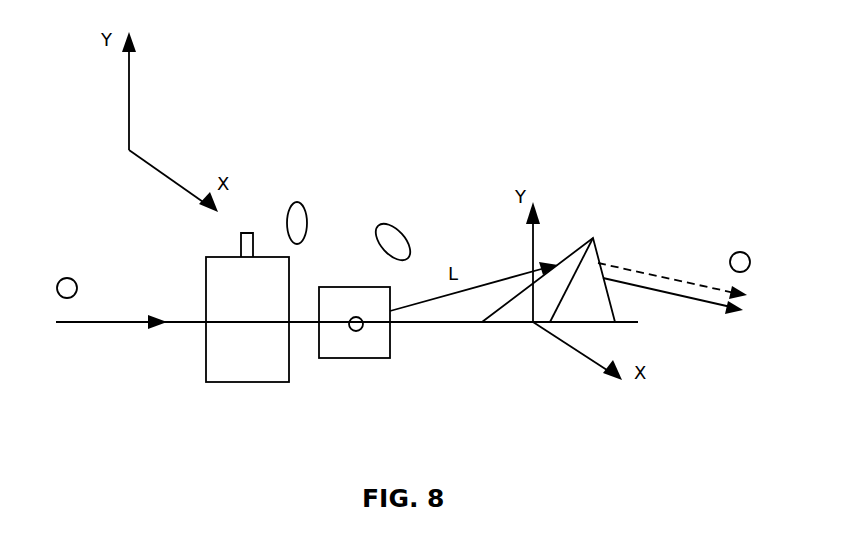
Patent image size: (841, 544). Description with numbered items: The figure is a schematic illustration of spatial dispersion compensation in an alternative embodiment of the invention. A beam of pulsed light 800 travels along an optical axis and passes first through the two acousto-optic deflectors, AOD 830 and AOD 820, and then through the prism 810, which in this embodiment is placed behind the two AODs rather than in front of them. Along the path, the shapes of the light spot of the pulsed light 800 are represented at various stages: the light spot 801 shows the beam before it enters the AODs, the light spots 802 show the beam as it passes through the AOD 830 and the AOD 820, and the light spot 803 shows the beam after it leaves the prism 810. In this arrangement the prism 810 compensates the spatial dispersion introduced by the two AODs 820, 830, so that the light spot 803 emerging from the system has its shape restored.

The pulsed light 800 is at (124, 320).
The light spot 801 is at (59, 277).
The light spot 802 is at (292, 202).
The light spot 803 is at (739, 250).
The prism 810 is at (570, 247).
The AOD 820 is at (342, 284).
The AOD 830 is at (204, 288).